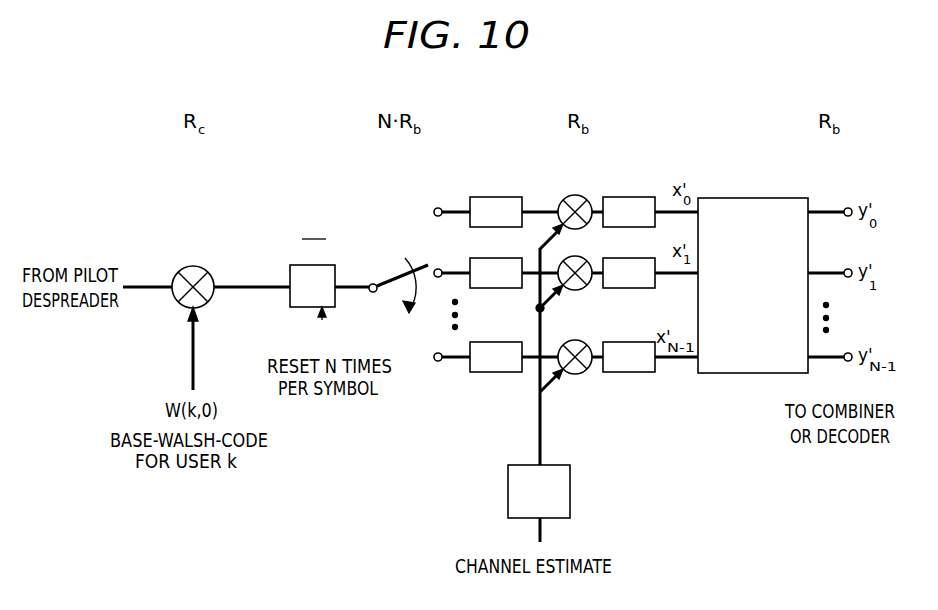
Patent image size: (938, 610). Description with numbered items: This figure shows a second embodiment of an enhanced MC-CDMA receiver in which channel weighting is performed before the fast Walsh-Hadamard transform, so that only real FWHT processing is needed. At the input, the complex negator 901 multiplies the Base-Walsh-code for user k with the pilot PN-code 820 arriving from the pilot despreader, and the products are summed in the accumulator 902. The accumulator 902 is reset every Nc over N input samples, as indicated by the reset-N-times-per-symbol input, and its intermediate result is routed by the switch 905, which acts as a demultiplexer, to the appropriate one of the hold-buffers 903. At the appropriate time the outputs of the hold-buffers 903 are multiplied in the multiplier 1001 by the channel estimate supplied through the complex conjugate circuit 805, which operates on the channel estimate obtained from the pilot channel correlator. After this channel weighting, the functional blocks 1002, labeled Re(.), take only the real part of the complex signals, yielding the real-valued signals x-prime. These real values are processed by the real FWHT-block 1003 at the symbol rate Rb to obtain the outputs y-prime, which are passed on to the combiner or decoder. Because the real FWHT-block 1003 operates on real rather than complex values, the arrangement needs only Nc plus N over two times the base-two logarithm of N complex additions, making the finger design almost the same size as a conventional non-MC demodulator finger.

The pilot PN-code 820 is at (149, 283).
The complex negator 901 is at (202, 268).
The accumulator 902 is at (290, 265).
The switch 905 is at (395, 263).
The hold-buffers 903 is at (493, 197).
The multiplier 1001 is at (585, 371).
The functional blocks Re(.) 1002 is at (628, 197).
The real FWHT-block 1003 is at (754, 198).
The complex conjugate circuit 805 is at (508, 493).